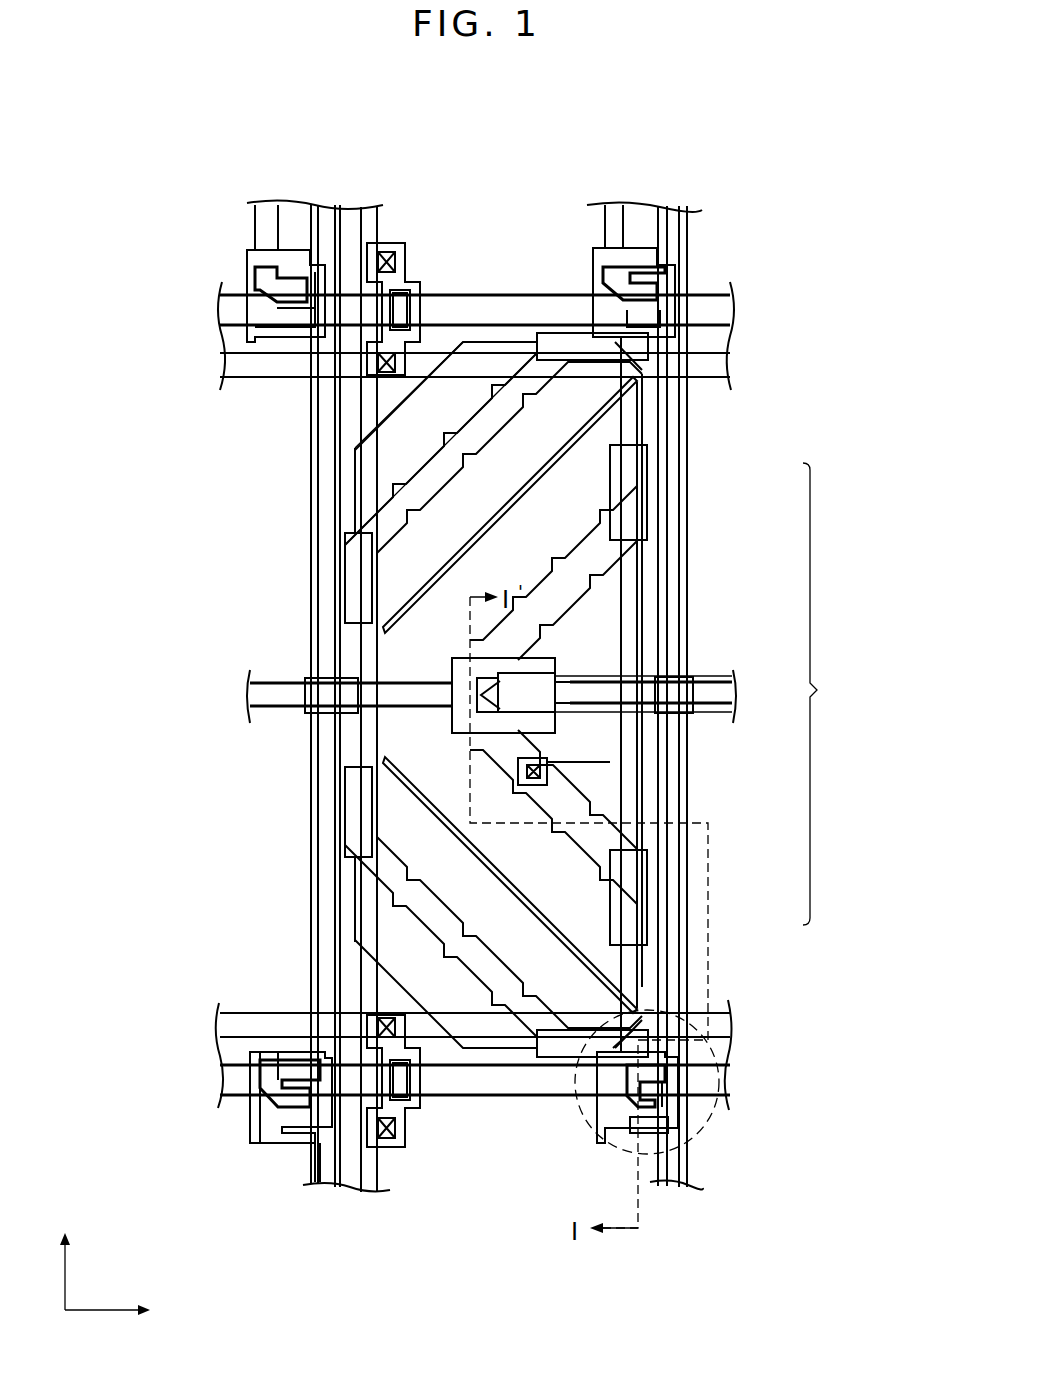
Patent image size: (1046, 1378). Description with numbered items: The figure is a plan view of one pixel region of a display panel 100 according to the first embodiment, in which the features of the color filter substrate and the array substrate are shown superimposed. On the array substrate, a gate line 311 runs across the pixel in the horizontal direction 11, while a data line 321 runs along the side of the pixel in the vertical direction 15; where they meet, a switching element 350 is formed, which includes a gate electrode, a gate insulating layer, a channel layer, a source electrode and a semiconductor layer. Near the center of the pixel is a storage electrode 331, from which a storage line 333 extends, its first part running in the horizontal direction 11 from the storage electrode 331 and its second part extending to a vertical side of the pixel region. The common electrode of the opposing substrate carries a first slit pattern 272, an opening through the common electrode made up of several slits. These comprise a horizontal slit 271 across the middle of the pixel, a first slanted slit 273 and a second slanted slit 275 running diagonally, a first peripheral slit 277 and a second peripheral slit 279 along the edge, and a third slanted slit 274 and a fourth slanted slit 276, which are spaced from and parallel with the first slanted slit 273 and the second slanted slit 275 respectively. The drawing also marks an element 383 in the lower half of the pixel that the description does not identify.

The display panel 100 is at (512, 98).
The gate line 311 is at (495, 292).
The data line 321 is at (362, 205).
The switching element 350 is at (572, 1113).
The horizontal slit 271 is at (400, 683).
The storage electrode 331 is at (452, 662).
The storage line 333 is at (440, 734).
The contact hole 383 is at (520, 764).
The first slit pattern 272 is at (601, 633).
The first slanted slit 273 is at (600, 810).
The second slanted slit 275 is at (572, 558).
The first peripheral slit 277 is at (650, 912).
The second peripheral slit 279 is at (652, 473).
The third slanted slit 274 is at (422, 926).
The fourth slanted slit 276 is at (422, 463).
The horizontal direction 11 is at (125, 1312).
The vertical direction 15 is at (66, 1255).